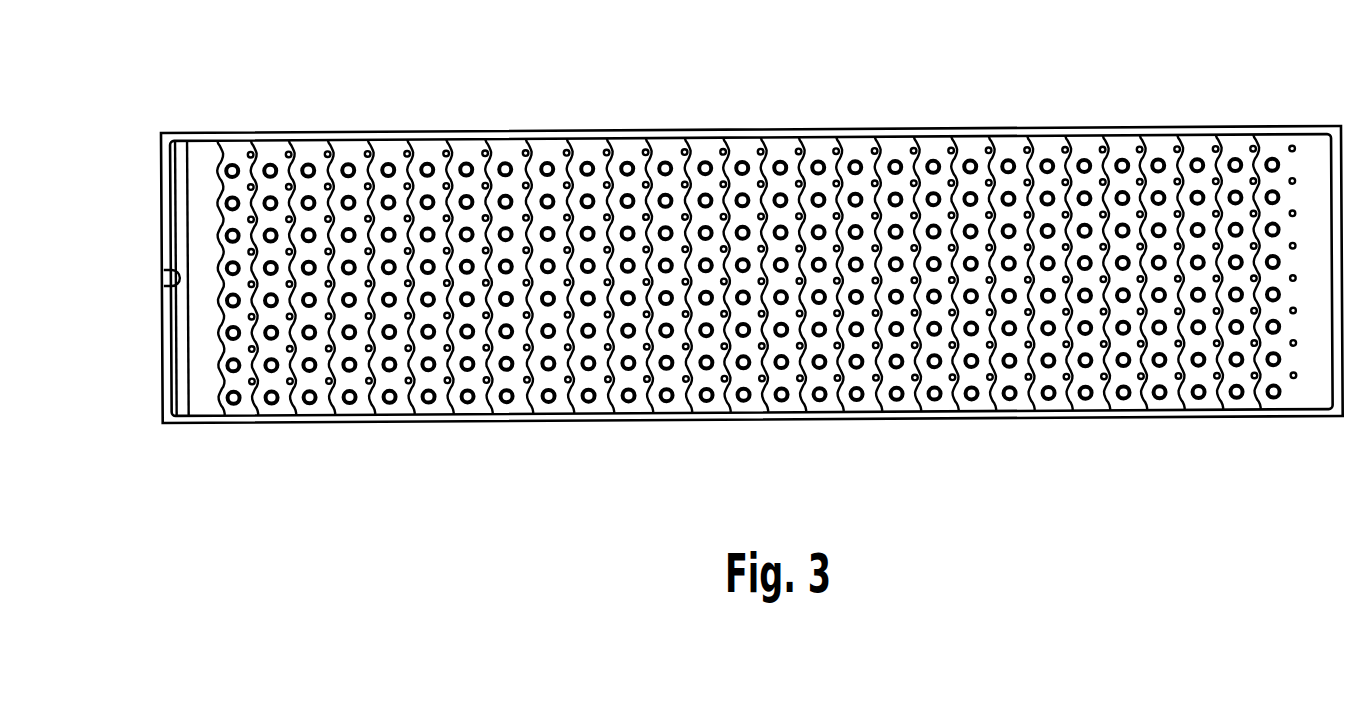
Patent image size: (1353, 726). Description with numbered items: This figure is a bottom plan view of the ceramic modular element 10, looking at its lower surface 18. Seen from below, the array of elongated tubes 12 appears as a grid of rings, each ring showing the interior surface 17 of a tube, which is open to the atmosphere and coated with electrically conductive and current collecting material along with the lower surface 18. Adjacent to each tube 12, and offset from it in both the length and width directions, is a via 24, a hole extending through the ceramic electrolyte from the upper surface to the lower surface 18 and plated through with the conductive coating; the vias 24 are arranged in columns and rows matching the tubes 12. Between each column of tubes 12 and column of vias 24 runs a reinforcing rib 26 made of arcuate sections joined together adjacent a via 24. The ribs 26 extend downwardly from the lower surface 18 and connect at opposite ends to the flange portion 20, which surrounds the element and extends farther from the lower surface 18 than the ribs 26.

The ceramic modular element 10 is at (717, 255).
The elongated tubes 12 is at (1277, 398).
The interior surface 17 is at (1086, 160).
The lower surface 18 is at (1318, 396).
The flange portion 20 is at (1293, 148).
The vias 24 is at (197, 406).
The reinforcing ribs 26 is at (160, 279).